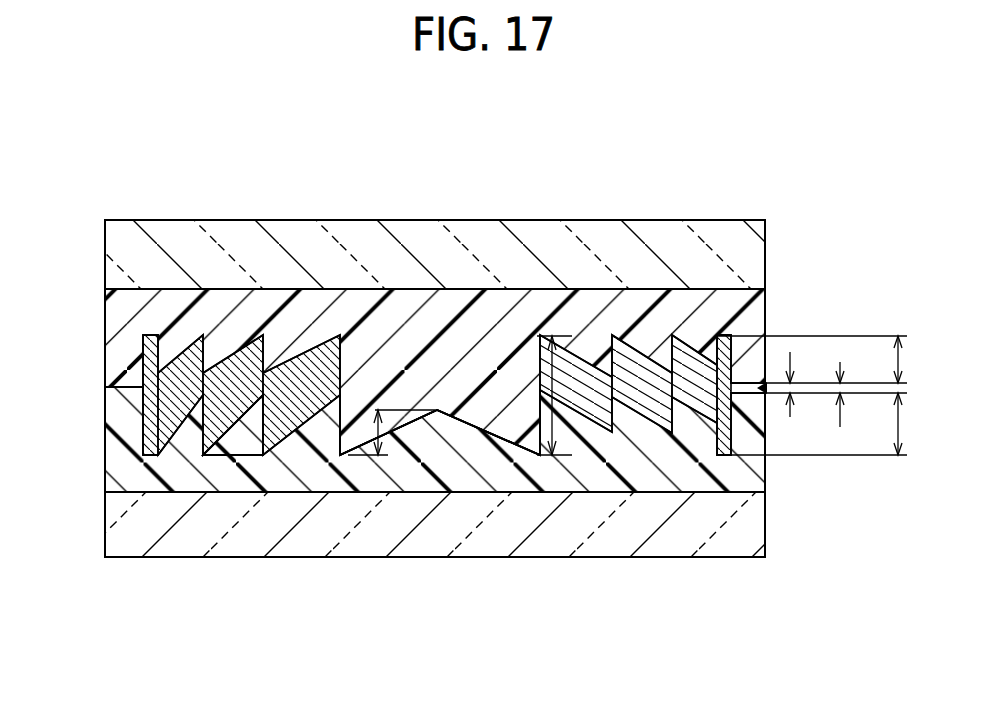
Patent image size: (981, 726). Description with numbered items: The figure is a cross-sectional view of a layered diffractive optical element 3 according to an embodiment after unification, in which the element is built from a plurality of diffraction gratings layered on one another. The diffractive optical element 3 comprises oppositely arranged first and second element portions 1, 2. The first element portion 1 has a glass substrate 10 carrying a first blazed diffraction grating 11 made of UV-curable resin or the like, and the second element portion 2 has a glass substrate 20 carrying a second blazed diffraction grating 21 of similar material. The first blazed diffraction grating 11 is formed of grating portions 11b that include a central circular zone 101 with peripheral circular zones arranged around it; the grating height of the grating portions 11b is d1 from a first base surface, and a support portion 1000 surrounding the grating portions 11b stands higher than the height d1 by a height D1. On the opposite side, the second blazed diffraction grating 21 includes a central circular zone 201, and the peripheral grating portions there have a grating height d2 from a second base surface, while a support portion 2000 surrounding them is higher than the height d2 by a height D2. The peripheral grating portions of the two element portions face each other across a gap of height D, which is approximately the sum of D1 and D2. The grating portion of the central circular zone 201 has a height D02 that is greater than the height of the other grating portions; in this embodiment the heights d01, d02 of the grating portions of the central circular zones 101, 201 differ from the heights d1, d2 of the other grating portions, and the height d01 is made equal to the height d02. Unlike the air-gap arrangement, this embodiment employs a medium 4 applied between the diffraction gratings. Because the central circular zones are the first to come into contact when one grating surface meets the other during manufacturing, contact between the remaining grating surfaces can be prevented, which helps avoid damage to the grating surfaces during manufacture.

The first element portion 1 is at (848, 470).
The glass substrate 10 is at (743, 522).
The first blazed diffraction grating 11 is at (743, 476).
The grating portions 11b is at (247, 448).
The central circular zone 101 is at (447, 432).
The support portion 1000 is at (126, 405).
The second element portion 2 is at (860, 228).
The glass substrate 20 is at (750, 243).
The second blazed diffraction grating 21 is at (750, 316).
The central circular zone 201 is at (430, 378).
The support portion 2000 is at (121, 344).
The layered diffractive optical element 3 is at (709, 166).
The medium 4 is at (247, 390).
The height of the grating portion of the central circular zone D02 is at (571, 395).
The height of the grating portion of the central circular zone d01 is at (383, 432).
The height of the grating portion of the central circular zone d02 is at (391, 432).
The height of the air layer D is at (847, 388).
The height D1 is at (840, 393).
The height D2 is at (791, 385).
The grating height d1 is at (836, 424).
The grating height d2 is at (829, 359).